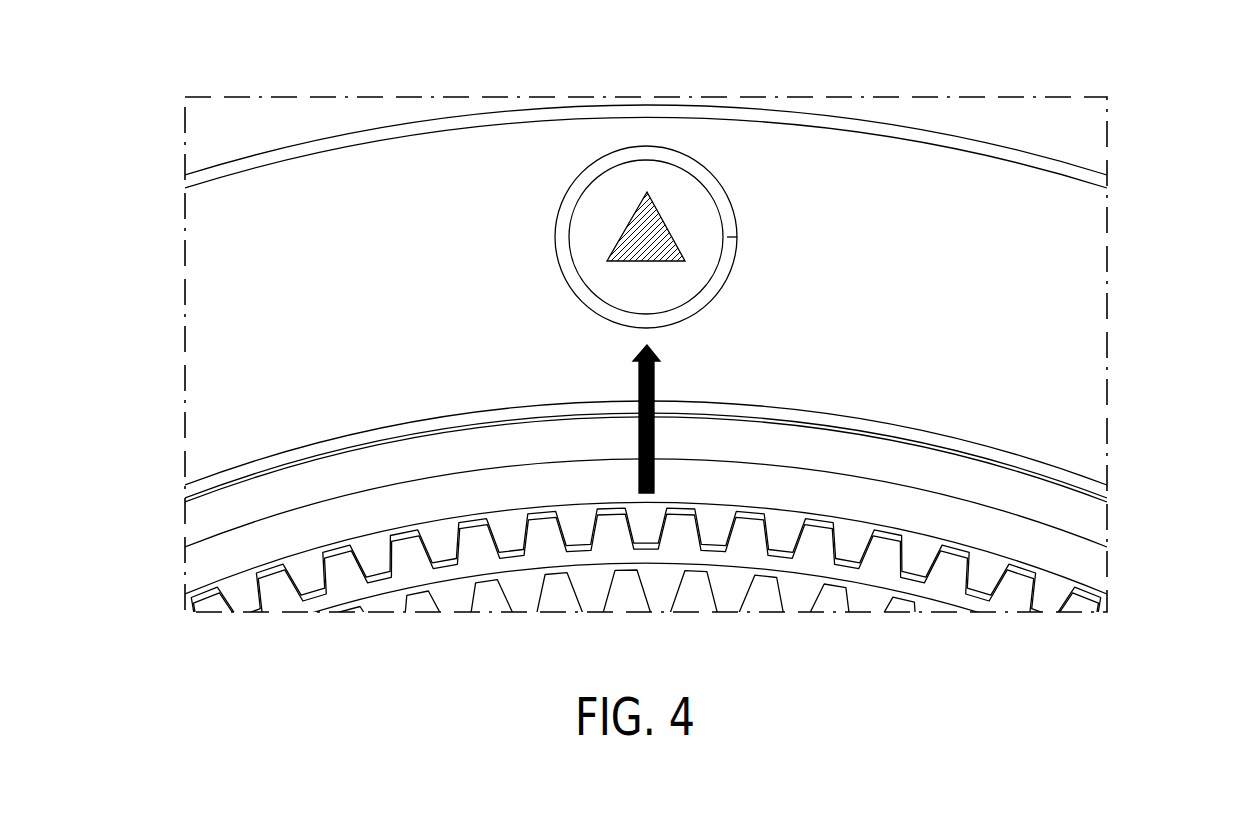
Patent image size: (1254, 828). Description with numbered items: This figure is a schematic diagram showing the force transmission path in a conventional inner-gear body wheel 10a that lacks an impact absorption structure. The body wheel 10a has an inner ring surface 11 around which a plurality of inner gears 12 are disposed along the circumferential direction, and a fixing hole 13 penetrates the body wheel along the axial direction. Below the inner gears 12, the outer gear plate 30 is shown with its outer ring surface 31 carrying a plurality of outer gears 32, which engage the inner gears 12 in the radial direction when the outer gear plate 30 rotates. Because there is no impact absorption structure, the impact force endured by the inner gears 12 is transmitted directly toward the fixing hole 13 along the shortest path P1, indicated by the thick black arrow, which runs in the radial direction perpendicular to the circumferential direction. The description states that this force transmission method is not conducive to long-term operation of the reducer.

The original inner-gear body wheel 10a is at (949, 177).
The inner ring surface 11 is at (390, 527).
The inner gears 12 is at (637, 510).
The fixing hole 13 is at (619, 205).
The shortest path P1 is at (665, 383).
The outer gear plate 30 is at (1183, 443).
The outer ring surface 31 is at (937, 604).
The outer gears 32 is at (673, 535).